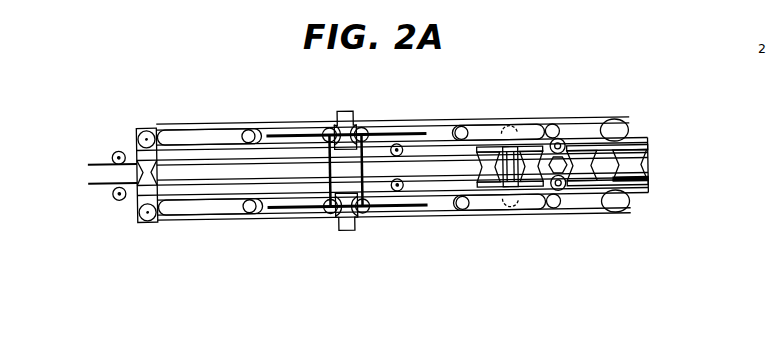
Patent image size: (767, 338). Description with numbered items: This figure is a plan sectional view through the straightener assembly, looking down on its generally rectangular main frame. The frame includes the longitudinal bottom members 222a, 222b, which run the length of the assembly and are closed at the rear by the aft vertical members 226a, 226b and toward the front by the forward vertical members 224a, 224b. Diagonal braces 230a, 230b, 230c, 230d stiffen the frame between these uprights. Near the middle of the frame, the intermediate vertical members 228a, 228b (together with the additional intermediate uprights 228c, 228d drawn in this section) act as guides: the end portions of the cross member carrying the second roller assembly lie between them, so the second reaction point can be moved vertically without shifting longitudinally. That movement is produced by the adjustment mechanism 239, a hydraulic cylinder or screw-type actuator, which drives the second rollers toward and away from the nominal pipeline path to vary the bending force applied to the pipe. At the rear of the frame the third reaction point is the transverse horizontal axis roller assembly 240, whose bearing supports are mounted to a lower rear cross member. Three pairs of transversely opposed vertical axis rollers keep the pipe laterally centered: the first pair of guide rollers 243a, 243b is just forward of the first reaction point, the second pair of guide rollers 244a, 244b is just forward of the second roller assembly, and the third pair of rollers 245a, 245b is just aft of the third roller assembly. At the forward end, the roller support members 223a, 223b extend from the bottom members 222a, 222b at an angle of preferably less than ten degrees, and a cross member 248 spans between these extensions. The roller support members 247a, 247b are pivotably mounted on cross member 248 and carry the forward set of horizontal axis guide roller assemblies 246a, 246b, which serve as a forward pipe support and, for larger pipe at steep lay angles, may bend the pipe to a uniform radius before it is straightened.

The longitudinal bottom member 222a is at (443, 205).
The longitudinal bottom member 222b is at (452, 120).
The roller support member 223a is at (577, 204).
The roller support member 223b is at (572, 125).
The forward vertical member 224a is at (553, 210).
The forward vertical member 224b is at (553, 124).
The aft vertical member 226a is at (147, 221).
The aft vertical member 226b is at (145, 130).
The intermediate vertical member 228a is at (364, 217).
The intermediate vertical member 228b is at (353, 126).
The lower left pivot 228c is at (328, 216).
The upper left pivot 228d is at (328, 127).
The diagonal brace 230a is at (483, 213).
The diagonal brace 230b is at (476, 128).
The diagonal brace 230c is at (198, 212).
The diagonal brace 230d is at (224, 136).
The adjustment mechanism 239 is at (330, 166).
The transverse horizontal axis roller assembly 240 is at (153, 165).
The vertical axis guide roller 243a is at (561, 192).
The vertical axis guide roller 243b is at (560, 139).
The vertical axis guide roller 244a is at (398, 194).
The vertical axis guide roller 244b is at (397, 146).
The vertical axis roller 245a is at (114, 199).
The vertical axis roller 245b is at (114, 152).
The horizontal axis guide roller assembly 246a is at (648, 157).
The horizontal axis guide roller assembly 246b is at (648, 172).
The roller support member 247a is at (344, 235).
The roller support member 247b is at (338, 112).
The cross member 248 is at (630, 185).